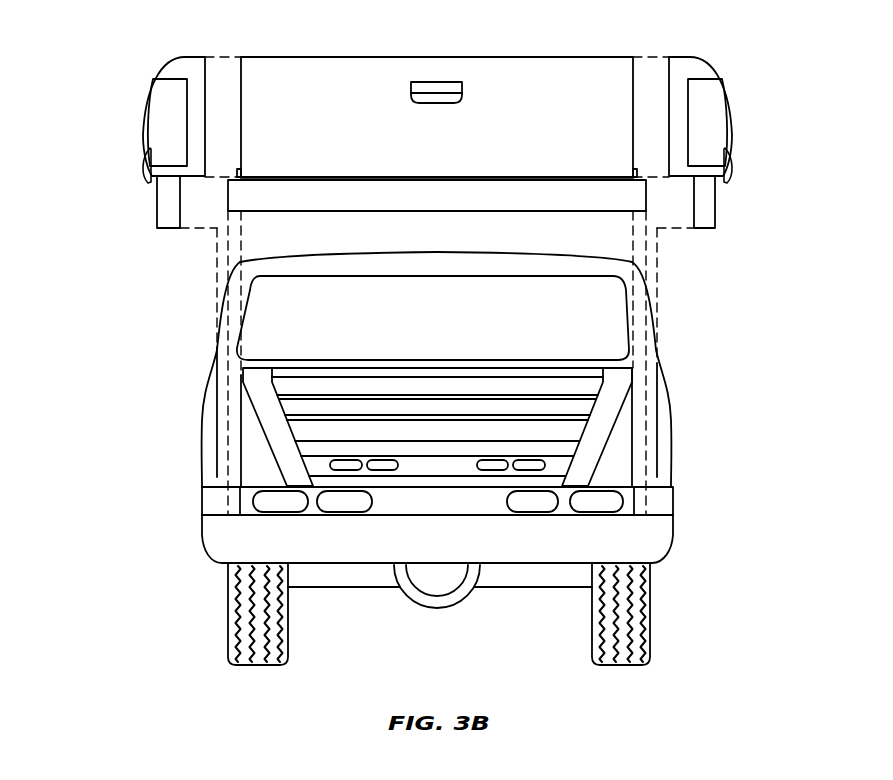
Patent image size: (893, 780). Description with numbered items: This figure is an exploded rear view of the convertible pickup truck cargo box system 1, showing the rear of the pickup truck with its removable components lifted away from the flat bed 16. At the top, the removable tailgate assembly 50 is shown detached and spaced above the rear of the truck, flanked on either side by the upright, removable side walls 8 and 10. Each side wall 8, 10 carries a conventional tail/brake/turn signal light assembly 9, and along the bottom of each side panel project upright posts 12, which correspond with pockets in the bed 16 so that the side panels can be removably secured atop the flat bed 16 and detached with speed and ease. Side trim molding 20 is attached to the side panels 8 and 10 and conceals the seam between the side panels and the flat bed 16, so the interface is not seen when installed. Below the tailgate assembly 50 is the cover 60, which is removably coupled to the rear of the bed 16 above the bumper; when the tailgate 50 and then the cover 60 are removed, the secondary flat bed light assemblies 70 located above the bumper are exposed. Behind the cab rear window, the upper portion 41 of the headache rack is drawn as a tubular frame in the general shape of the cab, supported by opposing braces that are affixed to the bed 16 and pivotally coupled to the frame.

The convertible pickup truck cargo box system 1 is at (85, 212).
The removable side wall 8 is at (710, 80).
The tail/brake/turn signal light assembly 9 is at (157, 125).
The removable side wall 10 is at (172, 78).
The upright post 12 is at (157, 218).
The flat bed 16 is at (258, 488).
The side trim molding 20 is at (143, 170).
The upper portion of headache rack 41 is at (603, 430).
The removable tailgate assembly 50 is at (581, 80).
The cover 60 is at (535, 211).
The flat bed light assembly 70 is at (253, 502).